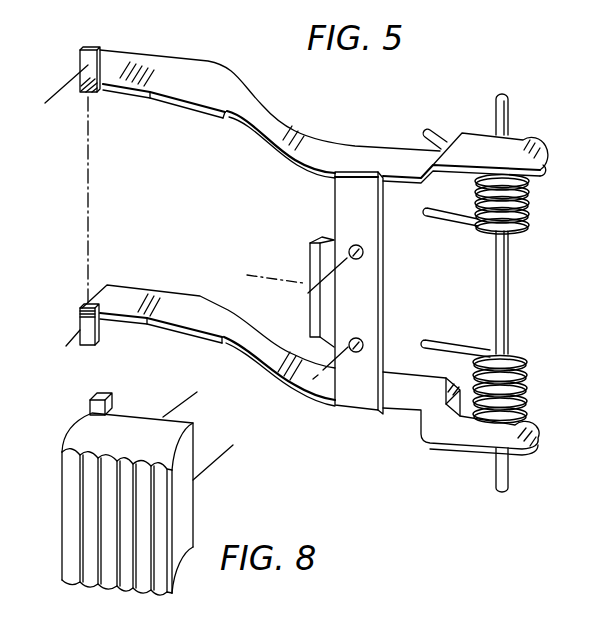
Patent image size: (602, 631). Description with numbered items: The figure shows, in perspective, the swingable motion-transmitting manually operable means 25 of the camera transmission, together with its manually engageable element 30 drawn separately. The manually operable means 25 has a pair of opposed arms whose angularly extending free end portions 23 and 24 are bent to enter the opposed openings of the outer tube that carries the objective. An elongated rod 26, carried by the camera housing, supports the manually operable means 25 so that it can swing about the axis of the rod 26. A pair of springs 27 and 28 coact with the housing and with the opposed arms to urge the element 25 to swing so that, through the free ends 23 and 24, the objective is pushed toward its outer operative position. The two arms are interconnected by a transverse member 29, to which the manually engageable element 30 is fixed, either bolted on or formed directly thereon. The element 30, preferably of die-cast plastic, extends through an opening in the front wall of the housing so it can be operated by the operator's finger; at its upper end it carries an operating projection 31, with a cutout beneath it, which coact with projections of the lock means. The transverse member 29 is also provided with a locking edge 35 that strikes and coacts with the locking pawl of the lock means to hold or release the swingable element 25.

In FIG. 5, the free end portion 23 is at (78, 318).
In FIG. 5, the free end portion 24 is at (80, 60).
In FIG. 5, the manually operable means 25 is at (193, 86).
In FIG. 5, the rod 26 is at (499, 94).
In FIG. 5, the spring 27 is at (526, 384).
In FIG. 5, the spring 28 is at (531, 198).
In FIG. 5, the transverse member 29 is at (360, 190).
In FIG. 8, the manually engageable element 30 is at (78, 441).
In FIG. 8, the operating projection 31 is at (113, 398).
In FIG. 5, the locking edge 35 is at (318, 257).